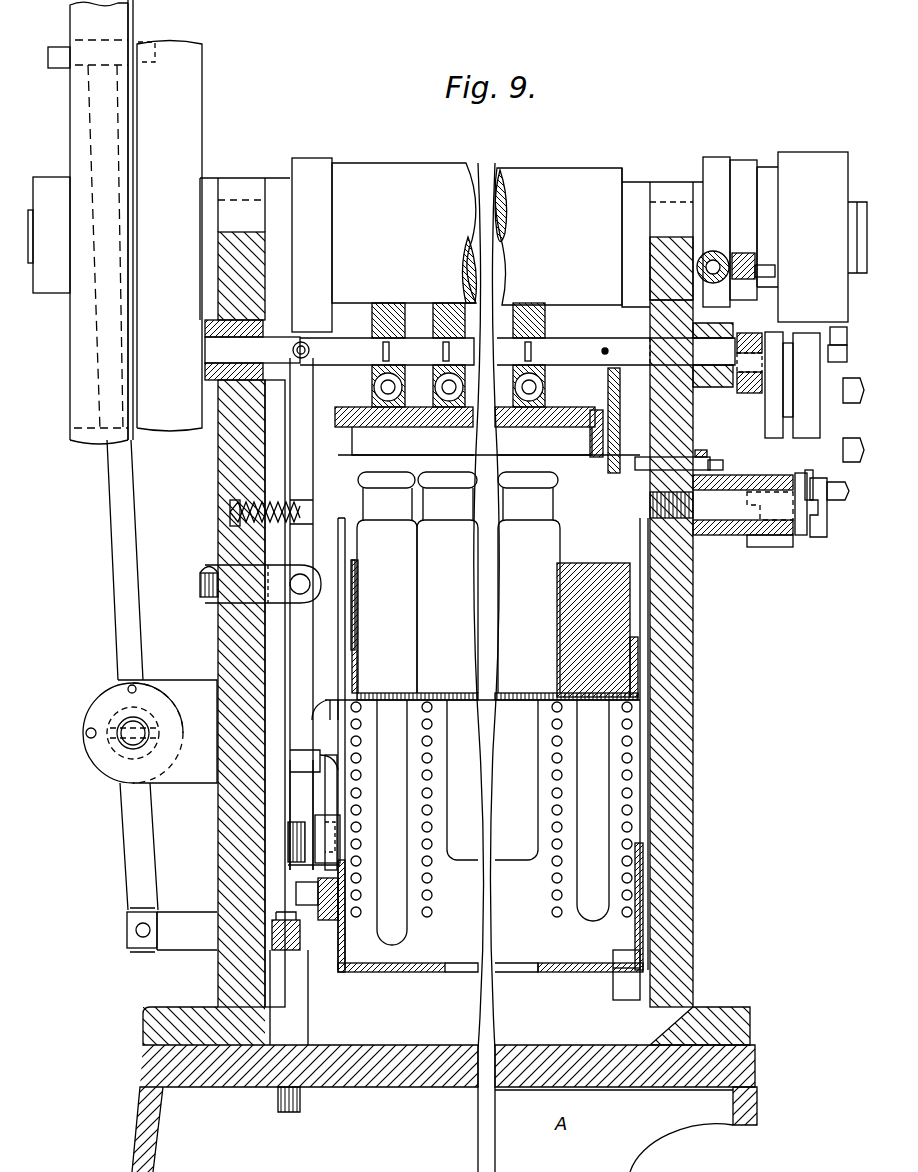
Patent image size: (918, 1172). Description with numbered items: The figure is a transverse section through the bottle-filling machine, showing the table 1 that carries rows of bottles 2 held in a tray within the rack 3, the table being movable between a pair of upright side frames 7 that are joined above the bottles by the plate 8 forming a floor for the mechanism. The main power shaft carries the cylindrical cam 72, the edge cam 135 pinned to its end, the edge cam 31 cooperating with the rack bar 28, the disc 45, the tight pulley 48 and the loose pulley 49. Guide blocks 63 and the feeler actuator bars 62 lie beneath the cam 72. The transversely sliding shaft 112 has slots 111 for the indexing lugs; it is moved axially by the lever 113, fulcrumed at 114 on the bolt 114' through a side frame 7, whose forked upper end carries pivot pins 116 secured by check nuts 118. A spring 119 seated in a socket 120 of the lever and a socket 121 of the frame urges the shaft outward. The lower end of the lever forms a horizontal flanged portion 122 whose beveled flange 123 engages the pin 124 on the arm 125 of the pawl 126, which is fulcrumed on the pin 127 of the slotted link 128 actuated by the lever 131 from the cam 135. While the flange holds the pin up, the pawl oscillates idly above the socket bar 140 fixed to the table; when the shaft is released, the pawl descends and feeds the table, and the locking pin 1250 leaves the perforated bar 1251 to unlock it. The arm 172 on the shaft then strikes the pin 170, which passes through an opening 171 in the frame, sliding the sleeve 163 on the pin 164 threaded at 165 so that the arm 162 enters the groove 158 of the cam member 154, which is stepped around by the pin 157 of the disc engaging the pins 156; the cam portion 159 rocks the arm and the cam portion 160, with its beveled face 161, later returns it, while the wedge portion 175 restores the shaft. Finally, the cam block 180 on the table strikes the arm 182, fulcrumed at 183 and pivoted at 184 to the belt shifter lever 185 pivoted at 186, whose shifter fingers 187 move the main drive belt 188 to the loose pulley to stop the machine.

The table 1 is at (640, 872).
The bottles 2 is at (458, 582).
The rack 3 is at (360, 662).
The side frames 7 is at (220, 633).
The plate 8 is at (540, 427).
The rack bar 28 is at (728, 254).
The edge cam 31 is at (722, 158).
The disc 45 is at (815, 156).
The tight pulley 48 is at (202, 72).
The loose pulley 49 is at (70, 332).
The bar 62 is at (378, 393).
The guide block 63 is at (398, 312).
The cylindrical cam 72 is at (477, 234).
The slot 111 is at (456, 345).
The shaft 112 is at (350, 338).
The lever 113 is at (313, 481).
The fulcrum 114 is at (299, 584).
The bolt 114' is at (183, 582).
The pivot pins 116 is at (302, 341).
The check nuts 118 is at (292, 349).
The spring 119 is at (283, 503).
The socket 120 is at (311, 511).
The socket 121 is at (240, 527).
The horizontal flanged portion 122 is at (292, 758).
The flange 123 is at (290, 780).
The pin 124 is at (352, 710).
The arm 125 is at (345, 778).
The pawl 126 is at (332, 825).
The pin 127 is at (342, 842).
The slotted link 128 is at (305, 820).
The lever 131 is at (270, 643).
The edge cam 135 is at (313, 158).
The socket bar 140 is at (336, 960).
The cam member 154 is at (776, 365).
The pins 156 is at (848, 386).
The pin 157 is at (838, 328).
The peripheral groove 158 is at (790, 393).
The cam portion 159 is at (840, 358).
The cam portion 160 is at (812, 476).
The beveled inner face 161 is at (800, 535).
The arm 162 is at (778, 548).
The sleeve 163 is at (723, 536).
The pin 164 is at (828, 526).
The threaded end 165 is at (653, 507).
The pin 170 is at (637, 467).
The opening 171 is at (650, 456).
The arm 172 is at (605, 405).
The wedge shaped portion 175 is at (740, 393).
The cam block 180 is at (300, 890).
The arm 182 is at (285, 955).
The fulcrum 183 is at (305, 1028).
The pivot 184 is at (130, 948).
The belt shifter lever 185 is at (122, 628).
The pivot 186 is at (122, 748).
The shifter fingers 187 is at (55, 47).
The main drive belt 188 is at (128, 21).
The locking pin 1250 is at (325, 700).
The bar 1251 is at (354, 645).